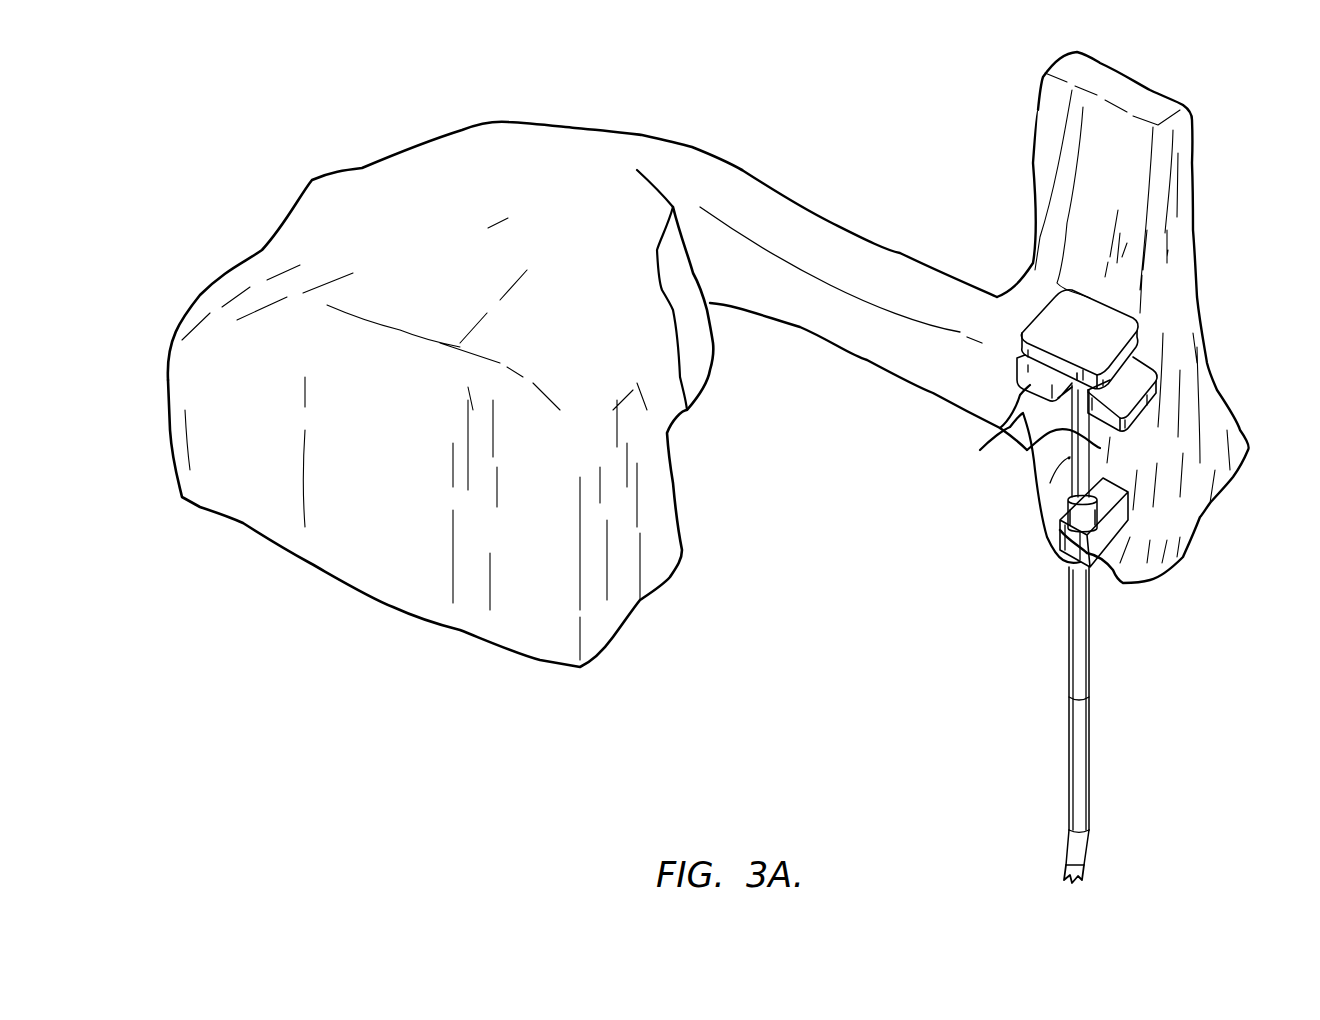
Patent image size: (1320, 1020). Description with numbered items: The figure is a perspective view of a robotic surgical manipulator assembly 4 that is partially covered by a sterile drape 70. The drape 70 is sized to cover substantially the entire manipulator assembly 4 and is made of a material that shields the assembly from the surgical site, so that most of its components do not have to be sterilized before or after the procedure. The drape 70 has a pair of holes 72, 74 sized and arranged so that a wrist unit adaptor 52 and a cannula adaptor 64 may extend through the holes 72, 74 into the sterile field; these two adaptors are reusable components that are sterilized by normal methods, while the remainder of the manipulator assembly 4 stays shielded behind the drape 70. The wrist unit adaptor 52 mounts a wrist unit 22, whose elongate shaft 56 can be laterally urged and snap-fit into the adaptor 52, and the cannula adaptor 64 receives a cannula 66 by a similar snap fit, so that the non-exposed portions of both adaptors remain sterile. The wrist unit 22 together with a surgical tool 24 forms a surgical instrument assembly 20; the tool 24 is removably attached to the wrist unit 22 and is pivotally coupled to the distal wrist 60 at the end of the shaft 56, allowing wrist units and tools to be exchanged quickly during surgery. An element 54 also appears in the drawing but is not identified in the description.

The manipulator assembly 4 is at (492, 74).
The sterile drape 70 is at (748, 207).
The hole 74 is at (1127, 522).
The elongate shaft 56 is at (1062, 462).
The upper clamp block 54 is at (1113, 325).
The wrist unit adaptor 52 is at (1033, 382).
The hole 72 is at (1153, 390).
The surgical instrument assembly 20 is at (1140, 755).
The cannula adaptor 64 is at (1100, 543).
The wrist unit 22 is at (1062, 628).
The cannula 66 is at (1090, 682).
The distal wrist 60 is at (1090, 827).
The surgical tool 24 is at (1085, 860).